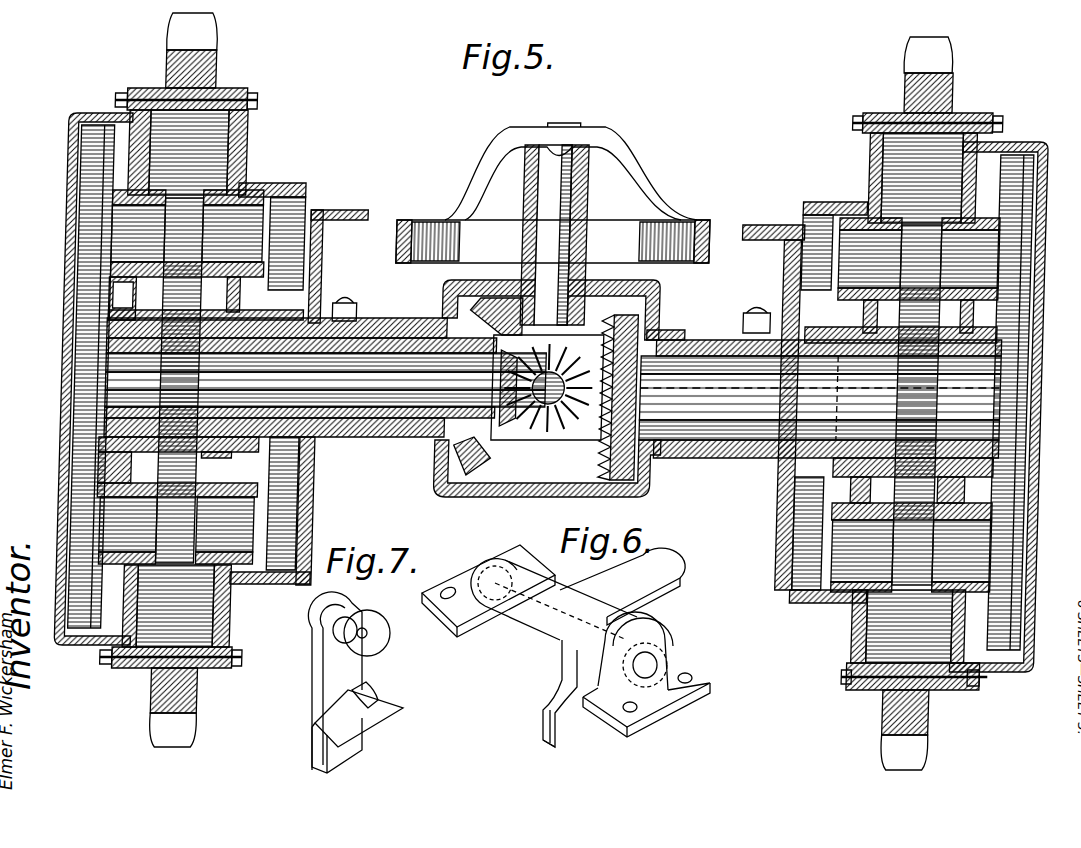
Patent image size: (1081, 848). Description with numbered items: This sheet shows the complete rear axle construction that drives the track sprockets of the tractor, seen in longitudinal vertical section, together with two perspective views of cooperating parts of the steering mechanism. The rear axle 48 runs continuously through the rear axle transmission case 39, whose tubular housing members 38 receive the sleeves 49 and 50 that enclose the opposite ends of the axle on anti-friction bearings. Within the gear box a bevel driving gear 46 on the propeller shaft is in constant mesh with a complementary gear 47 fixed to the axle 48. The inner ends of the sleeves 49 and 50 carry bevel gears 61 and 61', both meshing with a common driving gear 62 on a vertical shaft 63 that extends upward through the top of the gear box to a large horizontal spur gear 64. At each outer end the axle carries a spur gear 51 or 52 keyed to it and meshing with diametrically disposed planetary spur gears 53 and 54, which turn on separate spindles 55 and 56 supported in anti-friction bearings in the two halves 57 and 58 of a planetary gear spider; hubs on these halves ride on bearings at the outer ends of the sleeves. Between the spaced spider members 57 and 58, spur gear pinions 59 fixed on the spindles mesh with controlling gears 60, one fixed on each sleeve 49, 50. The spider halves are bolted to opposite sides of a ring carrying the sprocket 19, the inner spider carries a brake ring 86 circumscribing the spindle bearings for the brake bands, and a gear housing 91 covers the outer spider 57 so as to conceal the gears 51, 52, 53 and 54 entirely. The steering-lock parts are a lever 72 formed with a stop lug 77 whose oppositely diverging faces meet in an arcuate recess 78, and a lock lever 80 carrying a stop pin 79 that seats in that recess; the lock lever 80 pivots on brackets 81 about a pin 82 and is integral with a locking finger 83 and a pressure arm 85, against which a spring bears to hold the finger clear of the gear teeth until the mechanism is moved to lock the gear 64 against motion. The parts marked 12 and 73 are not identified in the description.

In FIG. 5, the axle housing 12 is at (334, 217).
In FIG. 5, the sprocket 19 is at (207, 60).
In FIG. 5, the housing member 38 is at (391, 334).
In FIG. 5, the rear axle transmission case 39 is at (665, 330).
In FIG. 5, the bevel driving gear 46 is at (580, 420).
In FIG. 5, the complementary gear 47 is at (518, 422).
In FIG. 5, the rear axle 48 is at (395, 408).
In FIG. 5, the sleeve 49 is at (350, 420).
In FIG. 5, the sleeve 50 is at (820, 398).
In FIG. 5, the spur gear 51 is at (75, 462).
In FIG. 5, the spur gear 52 is at (1032, 402).
In FIG. 5, the planetary spur gear 53 is at (74, 158).
In FIG. 5, the planetary spur gear 54 is at (108, 655).
In FIG. 5, the spindle 55 is at (555, 239).
In FIG. 5, the spindle 56 is at (545, 544).
In FIG. 5, the spider half 57 is at (75, 293).
In FIG. 5, the spider half 58 is at (245, 302).
In FIG. 5, the spur gear pinion 59 is at (184, 208).
In FIG. 5, the controlling gear 60 is at (198, 488).
In FIG. 5, the bevel gear 61 is at (343, 441).
In FIG. 5, the bevel gear 61' is at (666, 486).
In FIG. 5, the common driving gear 62 is at (455, 297).
In FIG. 5, the vertical shaft 63 is at (530, 262).
In FIG. 5, the spur gear 64 is at (698, 235).
In FIG. 7, the lever 72 is at (318, 640).
In FIG. 7, the roller 73 is at (361, 633).
In FIG. 7, the stop lug 77 is at (375, 720).
In FIG. 7, the arcuate recess 78 is at (380, 692).
In FIG. 6, the stop pin 79 is at (437, 607).
In FIG. 6, the lock lever 80 is at (500, 620).
In FIG. 6, the bracket 81 is at (472, 580).
In FIG. 6, the pin 82 is at (655, 663).
In FIG. 6, the locking finger 83 is at (543, 735).
In FIG. 6, the pressure arm 85 is at (622, 586).
In FIG. 5, the brake ring 86 is at (272, 183).
In FIG. 5, the gear housing 91 is at (95, 113).